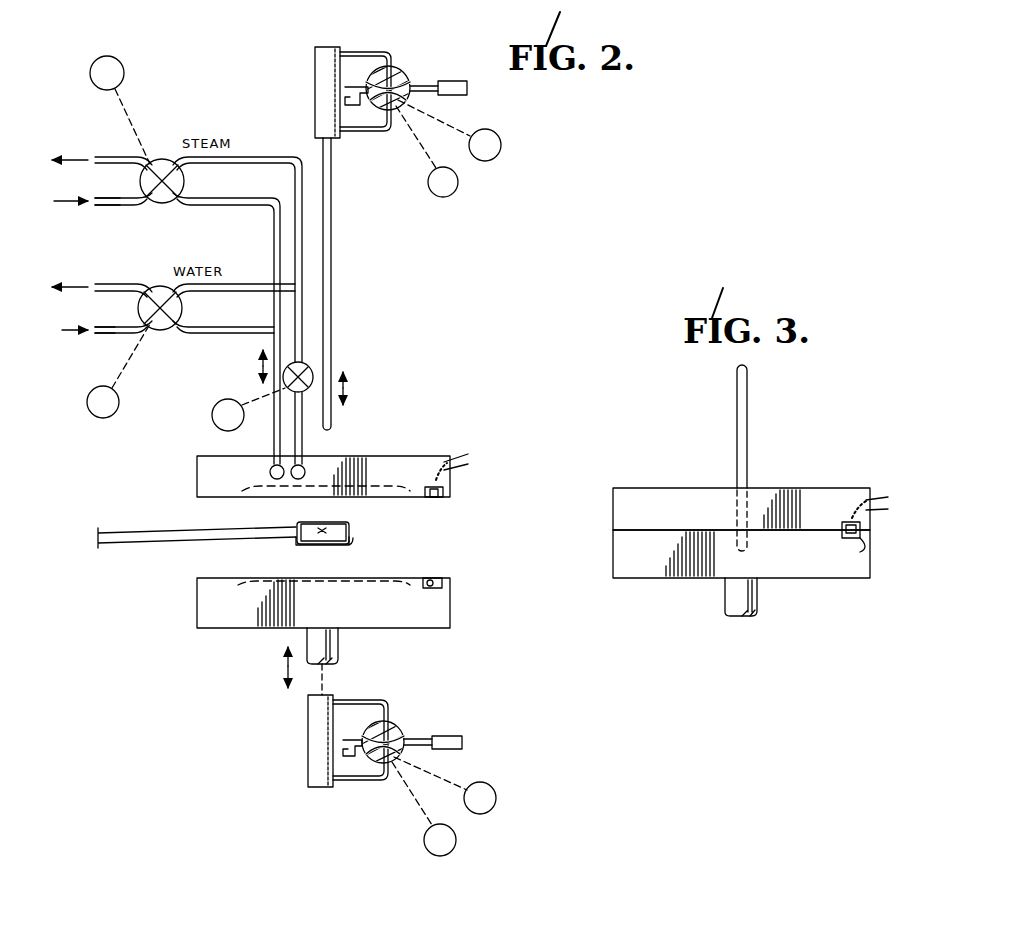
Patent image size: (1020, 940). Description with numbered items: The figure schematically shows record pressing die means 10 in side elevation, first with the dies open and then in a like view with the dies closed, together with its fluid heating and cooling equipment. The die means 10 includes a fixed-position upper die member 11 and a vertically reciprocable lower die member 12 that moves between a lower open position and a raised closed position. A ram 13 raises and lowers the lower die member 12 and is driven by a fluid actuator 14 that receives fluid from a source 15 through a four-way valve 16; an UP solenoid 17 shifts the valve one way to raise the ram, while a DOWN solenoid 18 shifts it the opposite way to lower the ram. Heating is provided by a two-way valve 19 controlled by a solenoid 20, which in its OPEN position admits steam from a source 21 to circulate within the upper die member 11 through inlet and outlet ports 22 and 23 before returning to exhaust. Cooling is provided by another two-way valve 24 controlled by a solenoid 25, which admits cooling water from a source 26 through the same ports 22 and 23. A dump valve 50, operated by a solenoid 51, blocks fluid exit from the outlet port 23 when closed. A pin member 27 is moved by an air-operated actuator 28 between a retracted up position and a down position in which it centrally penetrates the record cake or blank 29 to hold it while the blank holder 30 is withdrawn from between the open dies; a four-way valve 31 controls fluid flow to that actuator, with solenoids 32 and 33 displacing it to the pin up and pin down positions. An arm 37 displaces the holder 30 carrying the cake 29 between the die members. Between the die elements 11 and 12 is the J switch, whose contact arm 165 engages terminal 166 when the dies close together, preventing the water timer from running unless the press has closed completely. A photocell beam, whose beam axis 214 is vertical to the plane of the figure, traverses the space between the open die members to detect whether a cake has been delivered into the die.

In FIG. 2, the record pressing die means 10 is at (460, 421).
In FIG. 3, the record pressing die means 10 is at (846, 456).
In FIG. 2, the upper die member 11 is at (385, 467).
In FIG. 3, the upper die member 11 is at (616, 505).
In FIG. 2, the lower die member 12 is at (200, 620).
In FIG. 3, the lower die member 12 is at (622, 560).
In FIG. 2, the ram 13 is at (338, 652).
In FIG. 3, the ram 13 is at (757, 600).
In FIG. 2, the fluid actuator 14 is at (308, 742).
In FIG. 2, the source 15 is at (462, 740).
In FIG. 2, the four-way valve 16 is at (398, 722).
In FIG. 2, the UP solenoid 17 is at (455, 848).
In FIG. 2, the DOWN solenoid 18 is at (497, 797).
In FIG. 2, the two-way valve 19 is at (167, 205).
In FIG. 2, the solenoid 20 is at (90, 74).
In FIG. 2, the source 21 is at (113, 205).
In FIG. 2, the inlet port 22 is at (270, 472).
In FIG. 2, the outlet port 23 is at (305, 466).
In FIG. 2, the two-way valve 24 is at (167, 330).
In FIG. 2, the solenoid 25 is at (87, 402).
In FIG. 2, the source 26 is at (62, 330).
In FIG. 2, the pin member 27 is at (332, 243).
In FIG. 3, the pin member 27 is at (750, 392).
In FIG. 2, the actuator 28 is at (316, 90).
In FIG. 2, the record cake or blank 29 is at (352, 527).
In FIG. 2, the blank holder 30 is at (300, 545).
In FIG. 2, the four-way valve 31 is at (404, 72).
In FIG. 2, the solenoid 32 is at (455, 196).
In FIG. 2, the solenoid 33 is at (502, 146).
In FIG. 2, the arm 37 is at (153, 532).
In FIG. 2, the dump valve 50 is at (310, 366).
In FIG. 2, the solenoid 51 is at (226, 399).
In FIG. 2, the contact arm 165 is at (433, 498).
In FIG. 3, the contact arm 165 is at (862, 527).
In FIG. 2, the terminal 166 is at (445, 580).
In FIG. 3, the terminal 166 is at (866, 548).
In FIG. 2, the beam axis 214 is at (330, 548).